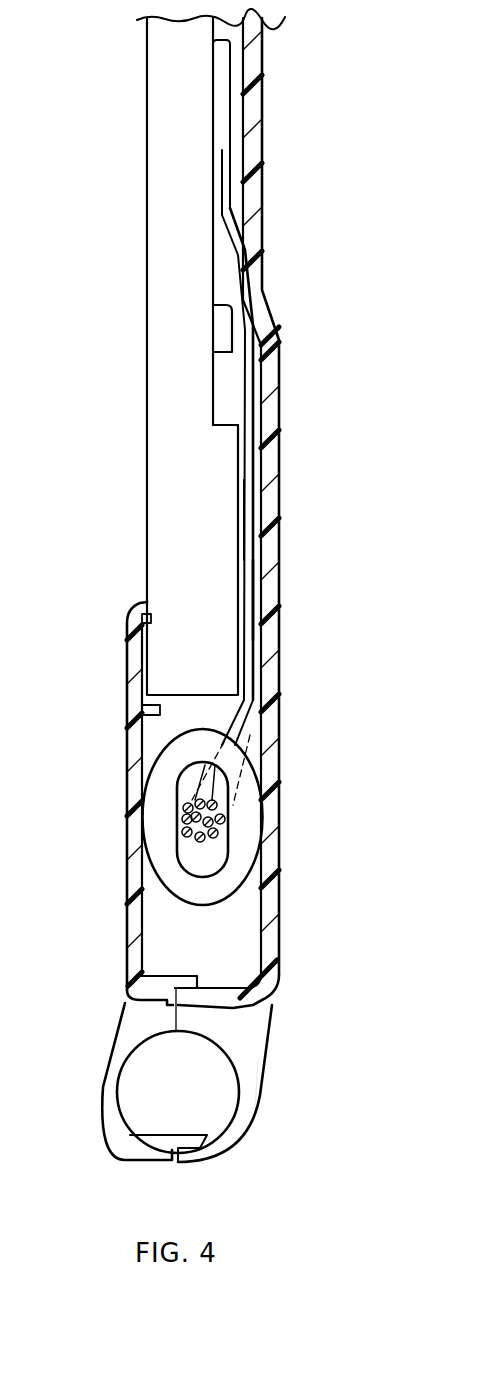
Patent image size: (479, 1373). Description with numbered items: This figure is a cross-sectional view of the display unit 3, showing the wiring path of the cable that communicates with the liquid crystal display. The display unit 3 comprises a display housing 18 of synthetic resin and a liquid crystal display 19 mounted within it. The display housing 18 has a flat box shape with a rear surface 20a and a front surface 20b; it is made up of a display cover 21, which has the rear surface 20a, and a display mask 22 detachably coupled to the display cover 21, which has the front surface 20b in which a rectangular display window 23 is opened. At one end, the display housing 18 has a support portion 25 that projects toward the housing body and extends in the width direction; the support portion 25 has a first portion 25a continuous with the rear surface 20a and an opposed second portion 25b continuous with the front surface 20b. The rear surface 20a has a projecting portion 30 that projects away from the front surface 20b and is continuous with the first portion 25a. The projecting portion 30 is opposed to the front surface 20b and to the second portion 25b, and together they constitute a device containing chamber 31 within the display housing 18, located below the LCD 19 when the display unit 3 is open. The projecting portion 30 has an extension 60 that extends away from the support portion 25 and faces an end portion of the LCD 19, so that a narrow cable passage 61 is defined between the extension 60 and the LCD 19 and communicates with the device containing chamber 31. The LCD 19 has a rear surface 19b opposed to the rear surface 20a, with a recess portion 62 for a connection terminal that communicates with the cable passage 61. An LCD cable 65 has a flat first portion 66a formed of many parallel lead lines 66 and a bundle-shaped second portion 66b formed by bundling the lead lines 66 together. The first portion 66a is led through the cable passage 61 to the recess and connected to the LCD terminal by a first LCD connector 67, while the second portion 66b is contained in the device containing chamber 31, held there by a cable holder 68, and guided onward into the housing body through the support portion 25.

The display unit 3 is at (112, 57).
The display housing 18 is at (62, 907).
The liquid crystal display (LCD) 19 is at (165, 296).
The rear surface of LCD 19b is at (242, 433).
The rear surface 20a is at (258, 60).
The front surface 20b is at (131, 684).
The display cover 21 is at (140, 968).
The display mask 22 is at (135, 920).
The display window 23 is at (137, 605).
The support portion 25 is at (268, 1045).
The first portion 25a is at (262, 1093).
The second portion 25b is at (110, 1045).
The projecting portion 30 is at (268, 770).
The device containing chamber 31 is at (248, 916).
The extension 60 is at (270, 450).
The cable passage 61 is at (248, 522).
The recess portion 62 is at (217, 94).
The LCD cable 65 is at (256, 714).
The lead lines 66 is at (226, 831).
The first portion 66a is at (250, 583).
The second portion 66b is at (190, 808).
The first LCD connector 67 is at (223, 322).
The cable holder 68 is at (232, 870).